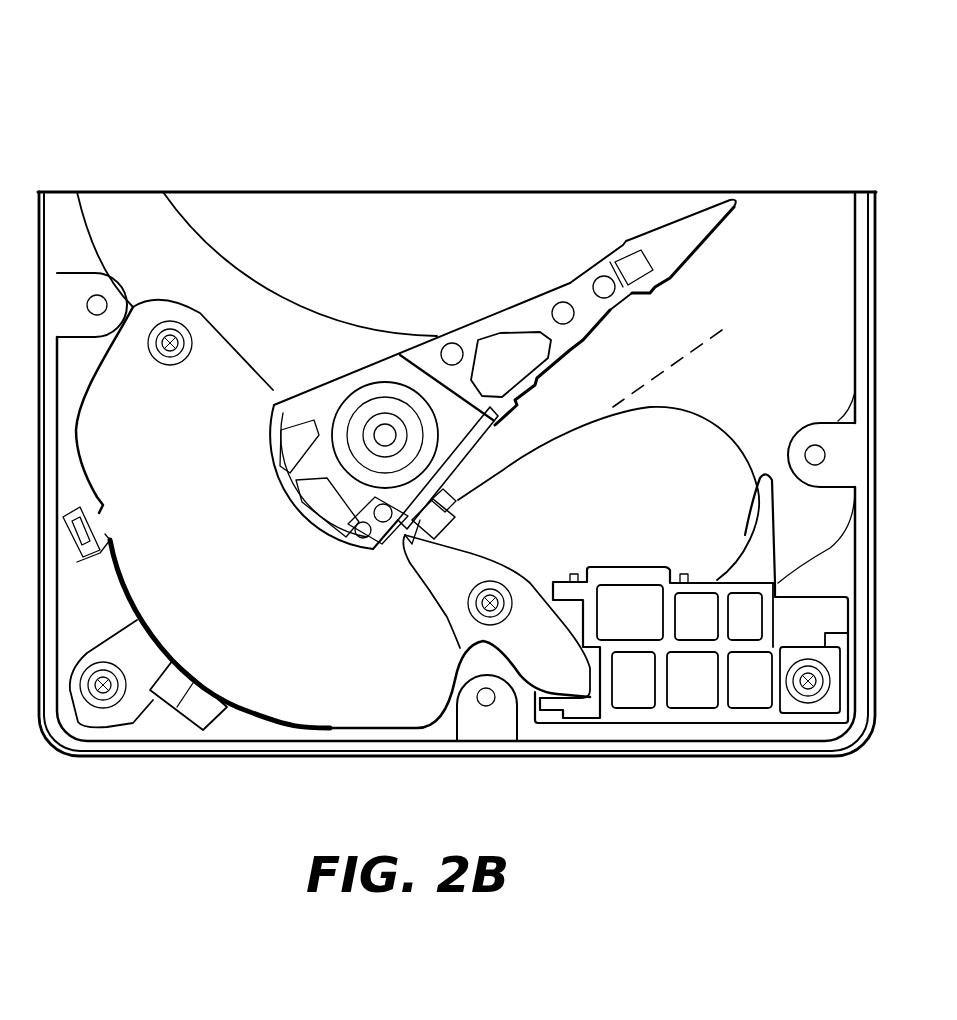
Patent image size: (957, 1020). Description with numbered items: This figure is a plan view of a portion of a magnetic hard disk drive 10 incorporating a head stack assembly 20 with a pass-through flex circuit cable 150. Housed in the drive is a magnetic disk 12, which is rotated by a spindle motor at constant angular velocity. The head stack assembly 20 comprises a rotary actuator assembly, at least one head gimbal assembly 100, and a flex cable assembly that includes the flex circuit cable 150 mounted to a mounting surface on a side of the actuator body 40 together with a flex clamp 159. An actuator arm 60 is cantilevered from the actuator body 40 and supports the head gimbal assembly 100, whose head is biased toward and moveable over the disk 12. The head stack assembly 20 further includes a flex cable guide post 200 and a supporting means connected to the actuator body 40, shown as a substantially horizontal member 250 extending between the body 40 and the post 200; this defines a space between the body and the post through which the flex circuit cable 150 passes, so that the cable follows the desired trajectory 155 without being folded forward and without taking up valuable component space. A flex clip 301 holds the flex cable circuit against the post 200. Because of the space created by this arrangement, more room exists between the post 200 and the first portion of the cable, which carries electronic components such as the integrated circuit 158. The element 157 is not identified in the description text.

The magnetic hard disk drive 10 is at (800, 155).
The magnetic disk 12 is at (330, 263).
The head stack assembly 20 is at (441, 318).
The actuator body 40 is at (337, 368).
The actuator arm 60 is at (470, 333).
The head gimbal assembly 100 is at (677, 234).
The flex circuit cable 150 is at (745, 435).
The trajectory 155 is at (696, 353).
The latch arm 157 is at (691, 412).
The integrated circuit 158 is at (500, 448).
The flex clamp 159 is at (753, 711).
The flex cable guide post 200 is at (418, 554).
The substantially horizontal member 250 is at (405, 549).
The flex clip 301 is at (460, 534).